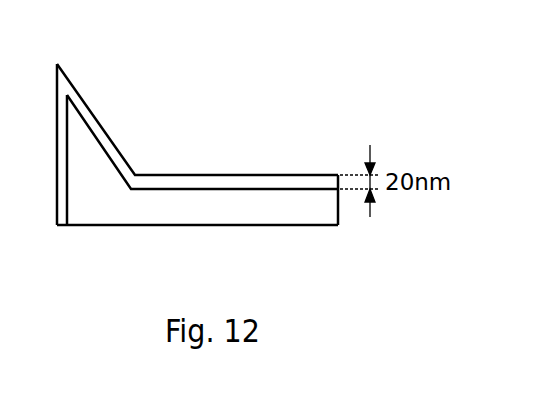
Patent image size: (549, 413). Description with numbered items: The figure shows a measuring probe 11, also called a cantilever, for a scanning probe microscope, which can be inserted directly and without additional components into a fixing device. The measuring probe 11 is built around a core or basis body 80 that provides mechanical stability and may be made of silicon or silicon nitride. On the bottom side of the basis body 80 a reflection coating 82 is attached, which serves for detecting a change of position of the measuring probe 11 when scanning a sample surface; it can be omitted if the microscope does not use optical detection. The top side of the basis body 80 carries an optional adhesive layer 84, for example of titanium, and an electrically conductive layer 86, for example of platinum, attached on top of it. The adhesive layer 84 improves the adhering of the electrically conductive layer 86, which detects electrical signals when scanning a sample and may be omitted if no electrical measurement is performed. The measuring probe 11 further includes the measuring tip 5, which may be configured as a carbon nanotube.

The measuring tip 5 is at (57, 64).
The measuring probe 11 is at (273, 123).
The basis body 80 is at (97, 200).
The reflection coating 82 is at (242, 228).
The adhesive layer 84 is at (113, 163).
The electrically conductive layer 86 is at (97, 118).